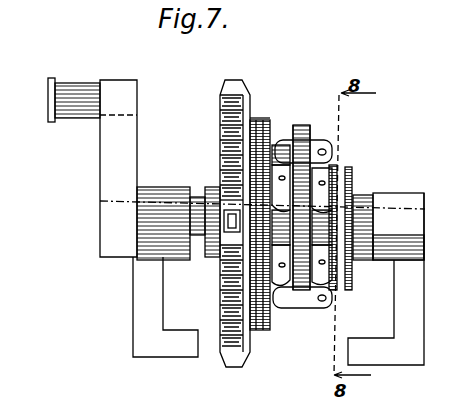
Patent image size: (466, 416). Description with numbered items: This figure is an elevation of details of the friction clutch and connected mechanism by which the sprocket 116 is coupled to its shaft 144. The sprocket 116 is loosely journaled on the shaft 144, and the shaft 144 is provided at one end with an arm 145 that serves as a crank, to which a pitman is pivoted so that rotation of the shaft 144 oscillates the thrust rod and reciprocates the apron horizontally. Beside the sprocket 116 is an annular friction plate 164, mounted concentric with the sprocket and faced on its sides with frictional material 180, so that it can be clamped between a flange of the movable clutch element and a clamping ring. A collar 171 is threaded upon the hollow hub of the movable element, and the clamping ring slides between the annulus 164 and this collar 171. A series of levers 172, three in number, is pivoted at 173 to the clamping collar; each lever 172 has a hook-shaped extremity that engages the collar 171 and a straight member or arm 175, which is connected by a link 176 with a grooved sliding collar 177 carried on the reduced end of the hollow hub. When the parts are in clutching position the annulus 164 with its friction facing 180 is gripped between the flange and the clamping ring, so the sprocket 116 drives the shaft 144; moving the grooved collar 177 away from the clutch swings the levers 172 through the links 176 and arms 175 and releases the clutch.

The sprocket 116 is at (222, 363).
The shaft 144 is at (110, 204).
The arm 145 is at (103, 172).
The annular friction plate 164 is at (262, 120).
The collar 171 is at (305, 288).
The levers 172 is at (301, 142).
The pivot 173 is at (286, 168).
The straight member or arm 175 is at (334, 160).
The link 176 is at (340, 170).
The grooved sliding collar 177 is at (344, 190).
The frictional material 180 is at (268, 126).